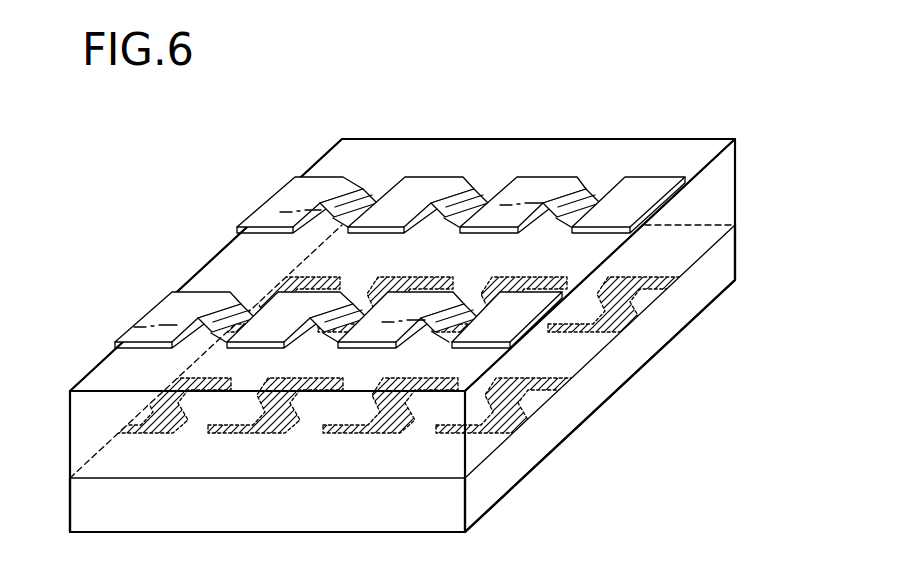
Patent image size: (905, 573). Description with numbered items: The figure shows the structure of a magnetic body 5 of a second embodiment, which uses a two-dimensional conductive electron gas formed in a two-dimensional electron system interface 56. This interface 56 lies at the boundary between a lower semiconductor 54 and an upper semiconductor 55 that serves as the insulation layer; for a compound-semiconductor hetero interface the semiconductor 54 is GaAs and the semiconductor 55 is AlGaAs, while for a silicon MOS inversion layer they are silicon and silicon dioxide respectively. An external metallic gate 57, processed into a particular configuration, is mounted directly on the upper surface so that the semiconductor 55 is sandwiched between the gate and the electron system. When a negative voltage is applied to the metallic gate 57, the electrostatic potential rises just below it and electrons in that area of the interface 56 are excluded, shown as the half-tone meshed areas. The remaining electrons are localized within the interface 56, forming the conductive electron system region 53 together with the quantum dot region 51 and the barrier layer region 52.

The magnetic body 5 is at (148, 218).
The quantum dot region 51 is at (345, 408).
The barrier layer region 52 is at (360, 385).
The conductive electron system region 53 is at (158, 458).
The semiconductor 54 is at (477, 503).
The semiconductor (insulation layer) 55 is at (707, 183).
The two-dimensional electron system interface 56 is at (582, 365).
The metallic gate 57 is at (282, 205).